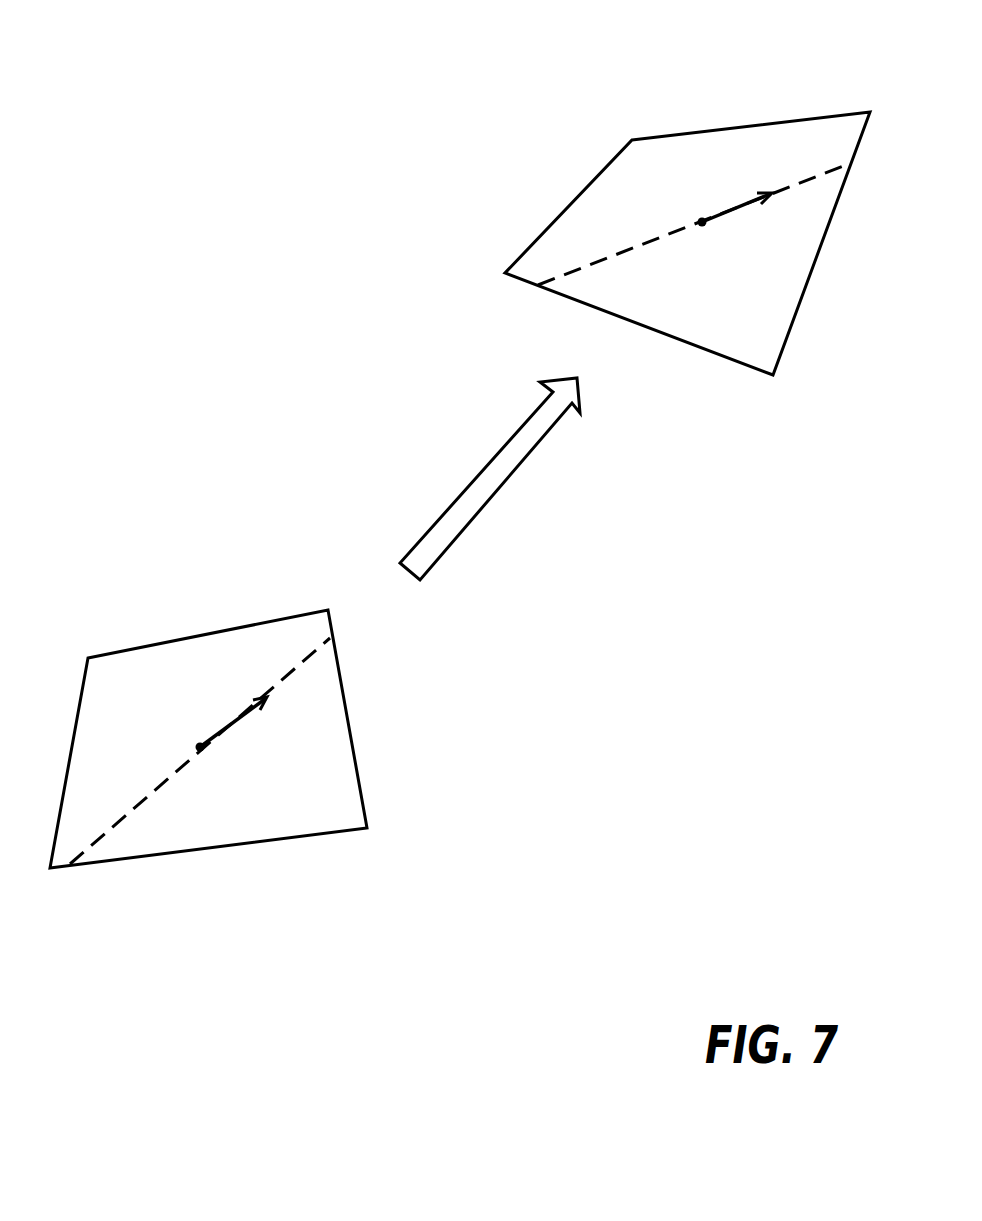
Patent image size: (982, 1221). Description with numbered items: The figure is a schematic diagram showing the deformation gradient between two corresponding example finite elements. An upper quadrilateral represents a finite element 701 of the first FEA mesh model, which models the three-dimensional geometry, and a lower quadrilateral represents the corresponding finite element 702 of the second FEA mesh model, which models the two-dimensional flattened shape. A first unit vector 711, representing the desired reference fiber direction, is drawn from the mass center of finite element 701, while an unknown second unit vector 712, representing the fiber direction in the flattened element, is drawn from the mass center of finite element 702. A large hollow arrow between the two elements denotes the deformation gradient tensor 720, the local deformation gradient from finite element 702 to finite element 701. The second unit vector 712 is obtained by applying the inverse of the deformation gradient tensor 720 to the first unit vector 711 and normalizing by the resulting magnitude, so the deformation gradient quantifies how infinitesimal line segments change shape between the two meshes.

The finite element of the first FEA mesh model 701 is at (753, 341).
The unit vector V1 711 is at (717, 210).
The finite element of the second FEA mesh model 702 is at (323, 819).
The unit vector V2 712 is at (235, 710).
The deformation gradient tensor Fc 720 is at (498, 498).